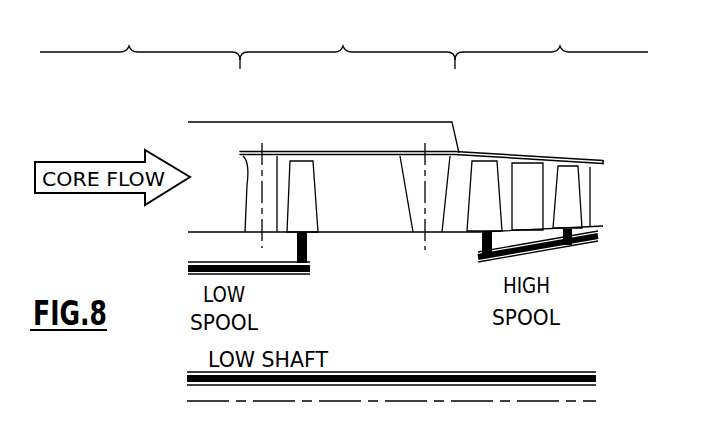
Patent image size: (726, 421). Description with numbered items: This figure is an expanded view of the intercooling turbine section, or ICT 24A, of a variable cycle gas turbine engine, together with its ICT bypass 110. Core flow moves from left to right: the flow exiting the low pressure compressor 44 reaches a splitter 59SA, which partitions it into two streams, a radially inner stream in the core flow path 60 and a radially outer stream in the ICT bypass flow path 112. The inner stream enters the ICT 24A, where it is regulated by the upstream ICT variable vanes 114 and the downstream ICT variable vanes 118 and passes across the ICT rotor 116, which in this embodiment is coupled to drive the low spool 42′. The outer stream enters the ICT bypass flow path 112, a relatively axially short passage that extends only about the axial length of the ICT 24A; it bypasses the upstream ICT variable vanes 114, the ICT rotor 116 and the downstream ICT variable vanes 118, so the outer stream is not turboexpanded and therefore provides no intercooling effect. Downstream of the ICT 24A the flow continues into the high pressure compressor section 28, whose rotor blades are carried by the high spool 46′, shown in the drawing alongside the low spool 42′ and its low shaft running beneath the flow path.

The low pressure compressor 44 is at (140, 44).
The intercooling turbine section 24A is at (347, 44).
The high pressure compressor section 28 is at (551, 40).
The splitter 59SA is at (243, 152).
The core flow path 60 is at (230, 206).
The ICT bypass 110 is at (567, 123).
The ICT bypass flow path 112 is at (378, 147).
The upstream ICT variable vanes 114 is at (267, 163).
The ICT rotor 116 is at (302, 163).
The downstream ICT variable vanes 118 is at (415, 165).
The low spool 42′ is at (277, 275).
The high spool 46′ is at (566, 253).